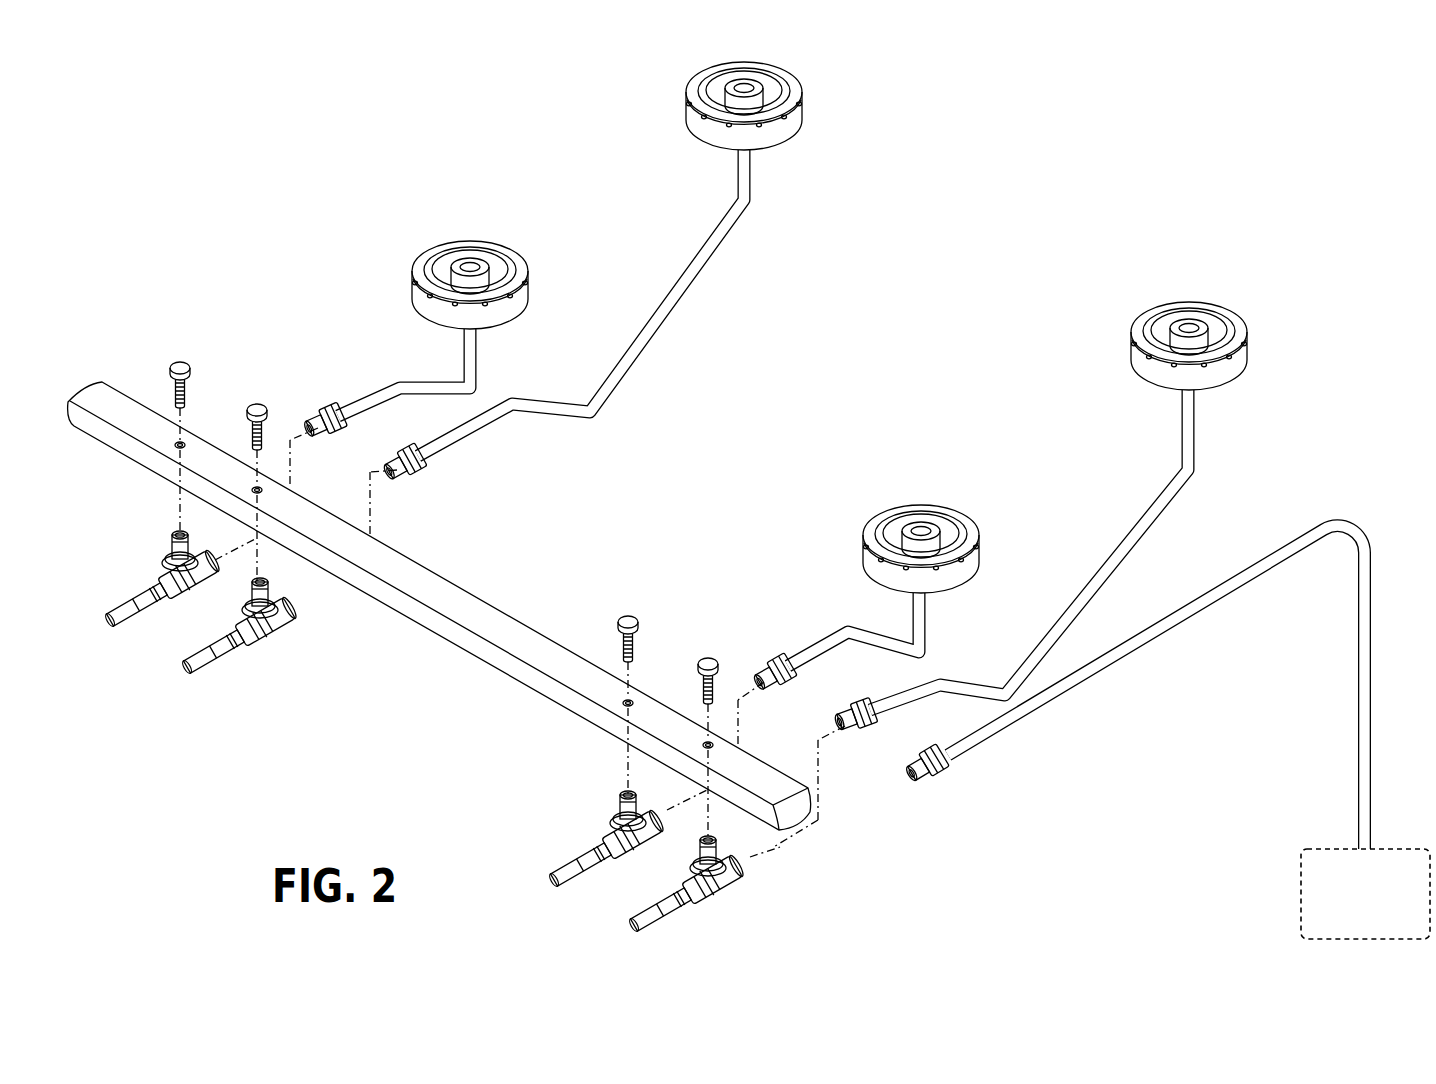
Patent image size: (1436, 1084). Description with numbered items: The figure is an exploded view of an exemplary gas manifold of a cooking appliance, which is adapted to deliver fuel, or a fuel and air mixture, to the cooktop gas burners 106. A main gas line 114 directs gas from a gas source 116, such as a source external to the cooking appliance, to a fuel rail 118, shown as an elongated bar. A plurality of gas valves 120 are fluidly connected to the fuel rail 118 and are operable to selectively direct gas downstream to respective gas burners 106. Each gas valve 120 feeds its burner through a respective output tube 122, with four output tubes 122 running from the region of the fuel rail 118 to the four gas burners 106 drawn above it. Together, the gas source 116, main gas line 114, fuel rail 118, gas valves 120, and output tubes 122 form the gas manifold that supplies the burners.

The gas burner 106 is at (490, 232).
The main gas line 114 is at (1371, 660).
The gas source 116 is at (1301, 886).
The fuel rail 118 is at (82, 393).
The gas valve 120 is at (218, 630).
The output tube 122 is at (410, 376).